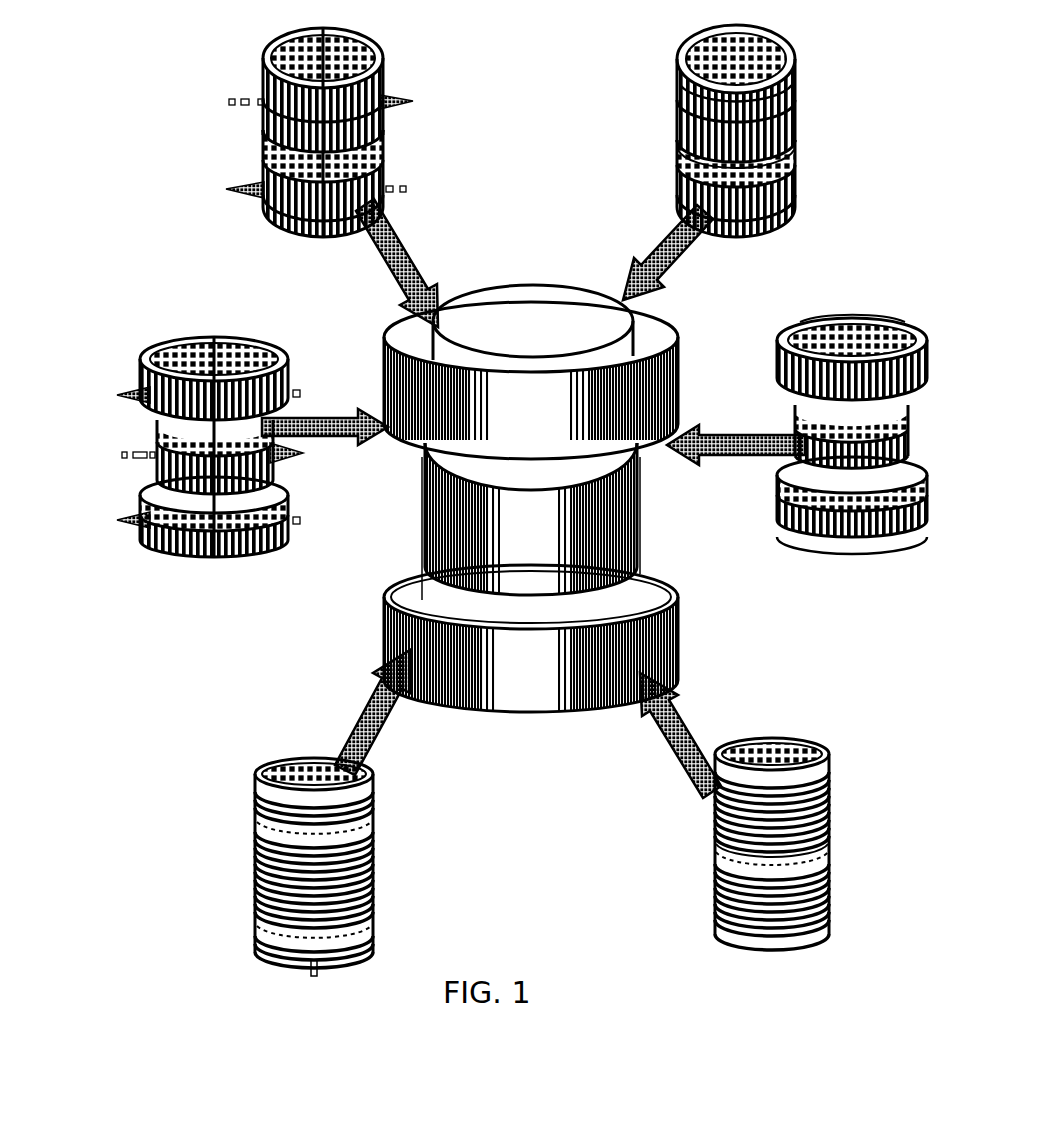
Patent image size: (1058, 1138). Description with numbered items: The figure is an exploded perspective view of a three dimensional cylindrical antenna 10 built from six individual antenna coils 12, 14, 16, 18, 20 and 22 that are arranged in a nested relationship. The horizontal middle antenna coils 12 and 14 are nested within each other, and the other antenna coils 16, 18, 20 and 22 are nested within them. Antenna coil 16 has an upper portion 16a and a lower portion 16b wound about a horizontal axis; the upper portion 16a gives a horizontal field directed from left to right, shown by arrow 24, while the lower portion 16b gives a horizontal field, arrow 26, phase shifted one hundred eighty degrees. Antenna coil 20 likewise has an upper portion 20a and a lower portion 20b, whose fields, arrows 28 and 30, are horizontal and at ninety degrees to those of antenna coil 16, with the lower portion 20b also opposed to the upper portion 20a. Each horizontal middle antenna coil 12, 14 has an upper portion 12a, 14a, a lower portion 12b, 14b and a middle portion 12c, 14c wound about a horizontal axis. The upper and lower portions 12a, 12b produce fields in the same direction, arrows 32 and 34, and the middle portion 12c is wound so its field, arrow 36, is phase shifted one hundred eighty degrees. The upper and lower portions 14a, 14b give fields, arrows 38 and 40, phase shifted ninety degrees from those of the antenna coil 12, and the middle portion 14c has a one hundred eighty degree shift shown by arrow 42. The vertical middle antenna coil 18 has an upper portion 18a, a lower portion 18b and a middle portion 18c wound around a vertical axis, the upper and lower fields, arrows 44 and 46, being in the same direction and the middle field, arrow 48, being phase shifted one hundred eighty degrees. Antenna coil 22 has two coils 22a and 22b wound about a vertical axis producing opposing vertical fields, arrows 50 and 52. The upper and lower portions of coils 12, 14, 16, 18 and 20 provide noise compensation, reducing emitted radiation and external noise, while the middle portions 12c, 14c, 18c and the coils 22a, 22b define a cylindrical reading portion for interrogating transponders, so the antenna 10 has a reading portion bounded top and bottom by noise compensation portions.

The three dimensional cylindrical antenna 10 is at (509, 730).
The horizontal middle antenna coil 12 is at (124, 473).
The upper portion of antenna coil 12 12a is at (290, 376).
The lower portion of antenna coil 12 12b is at (272, 546).
The middle portion of antenna coil 12 12c is at (276, 466).
The horizontal middle antenna coil 14 is at (815, 539).
The upper portion of antenna coil 14 14a is at (783, 372).
The lower portion of antenna coil 14 14b is at (893, 533).
The middle portion of antenna coil 14 14c is at (797, 456).
The antenna coil 16 is at (402, 134).
The upper portion of antenna coil 16 16a is at (382, 80).
The lower portion of antenna coil 16 16b is at (386, 166).
The vertical middle antenna coil 18 is at (375, 861).
The upper portion of antenna coil 18 18a is at (368, 798).
The lower portion of antenna coil 18 18b is at (376, 940).
The middle portion of antenna coil 18 18c is at (372, 900).
The antenna coil 20 is at (809, 124).
The upper portion of antenna coil 20 20a is at (797, 100).
The lower portion of antenna coil 20 20b is at (795, 183).
The vertical upper and lower antenna coil 22 is at (711, 909).
The upper coil of antenna coil 22 22a is at (832, 796).
The lower coil of antenna coil 22 22b is at (832, 891).
The arrow 24 is at (412, 99).
The arrow 26 is at (403, 194).
The arrow 28 is at (680, 107).
The arrow 30 is at (680, 173).
The arrow 32 is at (128, 388).
The arrow 34 is at (135, 522).
The arrow 36 is at (142, 454).
The arrow 38 is at (866, 354).
The arrow 40 is at (858, 538).
The arrow 42 is at (778, 522).
The arrow 44 is at (256, 778).
The arrow 46 is at (312, 976).
The arrow 48 is at (256, 876).
The arrow 50 is at (833, 823).
The arrow 52 is at (826, 926).